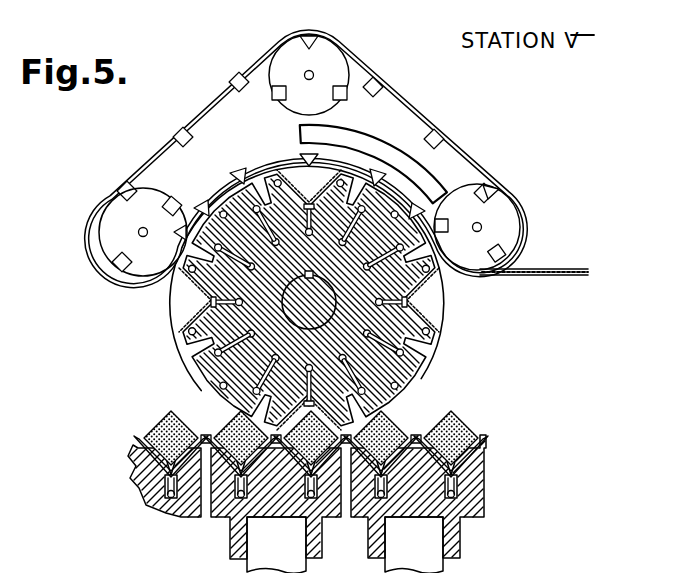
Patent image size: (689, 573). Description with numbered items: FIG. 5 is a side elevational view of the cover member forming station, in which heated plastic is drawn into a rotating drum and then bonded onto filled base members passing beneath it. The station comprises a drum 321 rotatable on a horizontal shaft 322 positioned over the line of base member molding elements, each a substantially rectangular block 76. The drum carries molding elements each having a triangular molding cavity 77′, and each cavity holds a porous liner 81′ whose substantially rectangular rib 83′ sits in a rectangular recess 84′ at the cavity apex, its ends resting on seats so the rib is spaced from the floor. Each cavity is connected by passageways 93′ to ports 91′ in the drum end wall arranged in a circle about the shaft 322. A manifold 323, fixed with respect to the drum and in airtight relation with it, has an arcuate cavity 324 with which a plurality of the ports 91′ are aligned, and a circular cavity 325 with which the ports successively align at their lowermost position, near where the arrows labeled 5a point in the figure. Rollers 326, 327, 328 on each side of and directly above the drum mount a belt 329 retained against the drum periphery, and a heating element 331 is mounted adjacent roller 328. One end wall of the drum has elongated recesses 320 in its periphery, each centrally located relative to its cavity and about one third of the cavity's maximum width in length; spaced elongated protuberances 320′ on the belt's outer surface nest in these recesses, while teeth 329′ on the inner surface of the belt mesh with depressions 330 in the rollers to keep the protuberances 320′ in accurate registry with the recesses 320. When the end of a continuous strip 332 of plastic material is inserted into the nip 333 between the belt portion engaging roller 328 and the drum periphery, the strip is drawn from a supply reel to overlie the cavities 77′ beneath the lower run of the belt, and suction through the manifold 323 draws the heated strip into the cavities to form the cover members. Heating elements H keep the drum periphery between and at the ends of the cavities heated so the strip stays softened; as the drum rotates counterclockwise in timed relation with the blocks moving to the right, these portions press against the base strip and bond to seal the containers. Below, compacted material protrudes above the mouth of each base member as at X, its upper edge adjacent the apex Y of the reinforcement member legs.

The roller 327 is at (278, 53).
The roller 326 is at (112, 234).
The roller 328 is at (484, 206).
The elongated recesses 320 is at (246, 168).
The elongated protuberances 320′ is at (170, 127).
The belt 329 is at (405, 80).
The teeth 329′ is at (384, 80).
The depressions 330 is at (96, 206).
The heating element 331 is at (451, 152).
The continuous strip of plastic material 332 is at (551, 260).
The nip 333 is at (443, 271).
The manifold 323 is at (335, 185).
The heating elements H is at (271, 162).
The ports 91′ is at (316, 304).
The drum 321 is at (273, 302).
The horizontal shaft 322 is at (195, 345).
The arcuate cavity 324 is at (196, 280).
The rectangular rib 83′ is at (426, 302).
The porous liner 81′ is at (428, 323).
The triangular molding cavity 77′ is at (402, 352).
The rectangular recess 84′ is at (407, 381).
The passageways 93′ is at (215, 372).
The circular cavity 325 is at (379, 401).
The adjusting screw 5a is at (323, 388).
The substantially rectangular block 76 is at (257, 477).
The apex of the legs Y is at (168, 410).
The protruding compacted material X is at (157, 425).